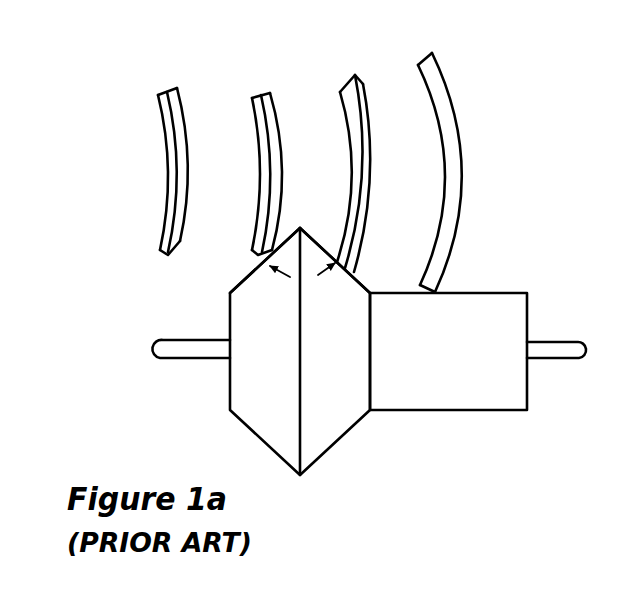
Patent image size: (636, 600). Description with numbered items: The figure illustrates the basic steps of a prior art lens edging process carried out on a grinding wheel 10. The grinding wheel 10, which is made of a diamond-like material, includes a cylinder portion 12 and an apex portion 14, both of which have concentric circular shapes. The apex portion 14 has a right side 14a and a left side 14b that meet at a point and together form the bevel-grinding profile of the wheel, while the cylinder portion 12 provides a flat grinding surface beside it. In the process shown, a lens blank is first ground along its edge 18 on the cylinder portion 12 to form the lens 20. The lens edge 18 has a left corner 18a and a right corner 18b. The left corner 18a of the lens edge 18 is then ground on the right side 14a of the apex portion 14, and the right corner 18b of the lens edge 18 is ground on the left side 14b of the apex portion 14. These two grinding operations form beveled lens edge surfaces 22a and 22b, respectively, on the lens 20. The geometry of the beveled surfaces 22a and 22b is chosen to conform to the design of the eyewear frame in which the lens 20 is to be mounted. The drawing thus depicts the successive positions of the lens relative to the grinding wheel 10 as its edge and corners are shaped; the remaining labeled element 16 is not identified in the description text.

The grinding wheel 10 is at (475, 335).
The cylinder portion 12 is at (458, 365).
The apex portion 14 is at (305, 351).
The right side of apex portion 14a is at (357, 278).
The left side of apex portion 14b is at (256, 270).
The curved mirror 16 is at (468, 163).
The lens edge 18 is at (353, 157).
The left corner of lens edge 18a is at (338, 88).
The right corner of lens edge 18b is at (357, 74).
The lens 20 is at (268, 157).
The beveled lens edge surface 22a is at (160, 93).
The beveled lens edge surface 22b is at (173, 92).